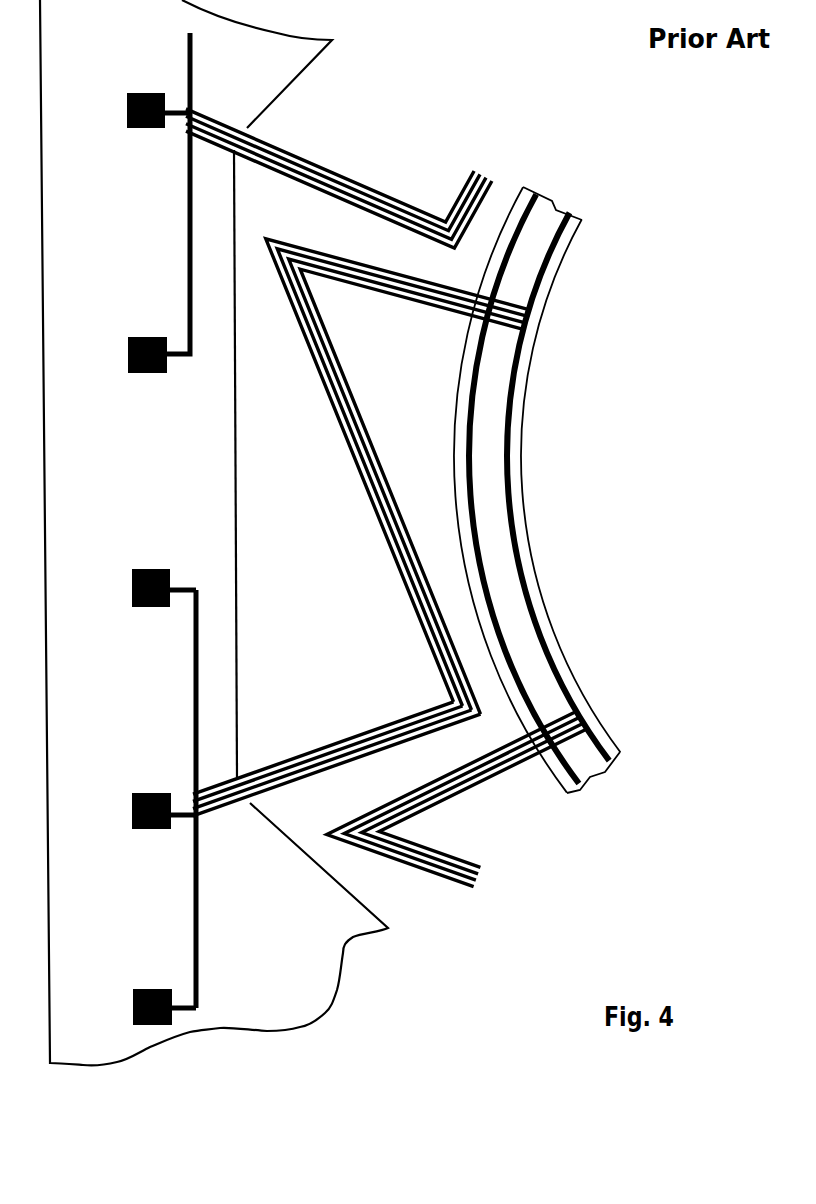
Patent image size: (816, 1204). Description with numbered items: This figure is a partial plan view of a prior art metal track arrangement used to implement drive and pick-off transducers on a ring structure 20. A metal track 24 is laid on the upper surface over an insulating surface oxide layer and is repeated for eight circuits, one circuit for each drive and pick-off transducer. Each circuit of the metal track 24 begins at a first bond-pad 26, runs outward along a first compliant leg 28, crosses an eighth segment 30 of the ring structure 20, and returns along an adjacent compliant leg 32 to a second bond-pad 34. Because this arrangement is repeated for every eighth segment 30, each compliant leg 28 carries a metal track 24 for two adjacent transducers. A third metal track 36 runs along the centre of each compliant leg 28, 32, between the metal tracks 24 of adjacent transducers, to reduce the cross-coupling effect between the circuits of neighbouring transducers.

The ring structure 20 is at (574, 243).
The metal track 24 is at (190, 226).
The first bond-pad 26 is at (146, 570).
The first compliant leg 28 is at (315, 752).
The eighth segment 30 is at (494, 526).
The adjacent compliant leg 32 is at (378, 191).
The second bond-pad 34 is at (130, 338).
The third metal track 36 is at (180, 822).